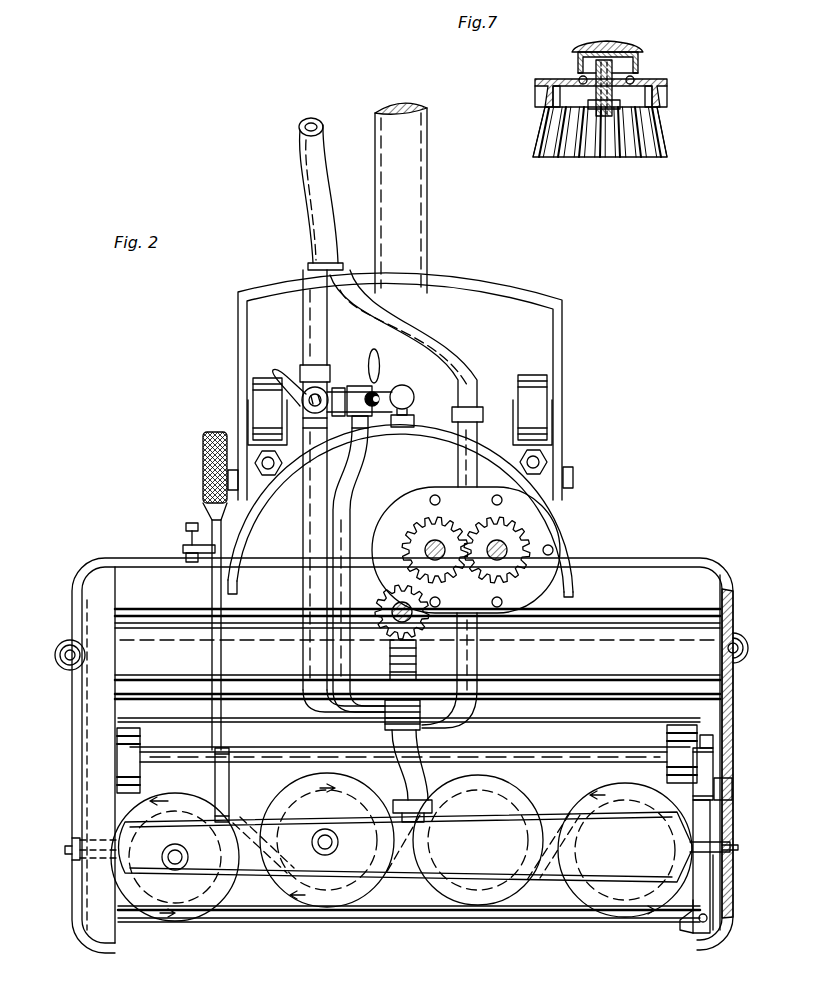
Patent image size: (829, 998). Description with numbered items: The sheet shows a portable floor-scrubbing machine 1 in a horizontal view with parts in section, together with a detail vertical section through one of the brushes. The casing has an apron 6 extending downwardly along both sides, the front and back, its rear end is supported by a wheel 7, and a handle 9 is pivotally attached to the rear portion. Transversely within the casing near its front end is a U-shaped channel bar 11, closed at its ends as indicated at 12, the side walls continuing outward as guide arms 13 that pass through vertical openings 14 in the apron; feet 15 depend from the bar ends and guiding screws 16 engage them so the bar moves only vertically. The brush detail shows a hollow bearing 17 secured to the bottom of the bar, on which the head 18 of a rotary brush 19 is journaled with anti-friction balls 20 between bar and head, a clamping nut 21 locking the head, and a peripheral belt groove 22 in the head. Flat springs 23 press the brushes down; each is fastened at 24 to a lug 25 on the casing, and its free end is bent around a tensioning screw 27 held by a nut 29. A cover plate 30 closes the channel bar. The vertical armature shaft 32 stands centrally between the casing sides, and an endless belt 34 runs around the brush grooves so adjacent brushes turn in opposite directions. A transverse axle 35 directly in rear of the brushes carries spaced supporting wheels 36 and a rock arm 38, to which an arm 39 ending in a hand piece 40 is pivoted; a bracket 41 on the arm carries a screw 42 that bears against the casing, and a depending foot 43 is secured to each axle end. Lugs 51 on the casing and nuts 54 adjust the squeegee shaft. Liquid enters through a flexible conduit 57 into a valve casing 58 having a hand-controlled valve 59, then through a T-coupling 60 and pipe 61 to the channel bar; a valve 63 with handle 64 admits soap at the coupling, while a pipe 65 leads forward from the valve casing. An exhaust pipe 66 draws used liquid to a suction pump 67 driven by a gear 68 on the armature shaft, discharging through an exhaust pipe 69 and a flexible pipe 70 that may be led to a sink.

In FIG. 2, the floor treating machine 1 is at (295, 95).
In FIG. 2, the apron 6 is at (95, 790).
In FIG. 2, the wheel 7 is at (265, 410).
In FIG. 2, the handle 9 is at (400, 210).
In FIG. 7, the U-shaped bar 11 is at (638, 58).
In FIG. 2, the U-shaped bar 11 is at (353, 857).
In FIG. 2, the closed ends of bar 12 is at (145, 905).
In FIG. 2, the guide arms 13 is at (73, 860).
In FIG. 2, the vertical openings 14 is at (731, 834).
In FIG. 2, the feet 15 is at (727, 867).
In FIG. 2, the guiding screws 16 is at (73, 838).
In FIG. 7, the hollow bearings 17 is at (590, 68).
In FIG. 2, the hollow bearings 17 is at (322, 848).
In FIG. 7, the head 18 is at (658, 97).
In FIG. 7, the rotary brush 19 is at (612, 155).
In FIG. 7, the anti-friction balls 20 is at (580, 79).
In FIG. 7, the clamping nut 21 is at (586, 106).
In FIG. 7, the peripheral belt groove 22 is at (545, 92).
In FIG. 2, the flat springs 23 is at (706, 765).
In FIG. 2, the spring fastening 24 is at (710, 920).
In FIG. 2, the lug 25 is at (683, 930).
In FIG. 2, the tensioning screw 27 is at (731, 783).
In FIG. 2, the nut 29 is at (716, 758).
In FIG. 7, the cover plate 30 is at (612, 42).
In FIG. 2, the cover plate 30 is at (470, 860).
In FIG. 2, the armature shaft 32 is at (395, 600).
In FIG. 2, the endless belt 34 is at (433, 742).
In FIG. 2, the transverse axle 35 is at (513, 753).
In FIG. 2, the supporting wheels 36 is at (123, 758).
In FIG. 2, the rock arm 38 is at (230, 785).
In FIG. 2, the arm 39 is at (224, 653).
In FIG. 2, the hand piece 40 is at (205, 446).
In FIG. 2, the bracket 41 is at (184, 548).
In FIG. 2, the screw 42 is at (192, 522).
In FIG. 2, the depending foot 43 is at (717, 738).
In FIG. 2, the lugs 51 is at (65, 640).
In FIG. 2, the nut 54 is at (57, 651).
In FIG. 2, the flexible conduit 57 is at (300, 138).
In FIG. 2, the valve casing 58 is at (308, 375).
In FIG. 2, the hand-controlled valve 59 is at (263, 392).
In FIG. 2, the T-coupling 60 is at (355, 390).
In FIG. 2, the pipe 61 is at (350, 493).
In FIG. 2, the valve 63 is at (414, 397).
In FIG. 2, the handle 64 is at (378, 366).
In FIG. 2, the pipe 65 is at (317, 487).
In FIG. 2, the exhaust pipe 66 is at (470, 653).
In FIG. 2, the suction pump 67 is at (540, 527).
In FIG. 2, the gear 68 is at (392, 566).
In FIG. 2, the exhaust pipe 69 is at (465, 463).
In FIG. 2, the flexible pipe 70 is at (328, 130).